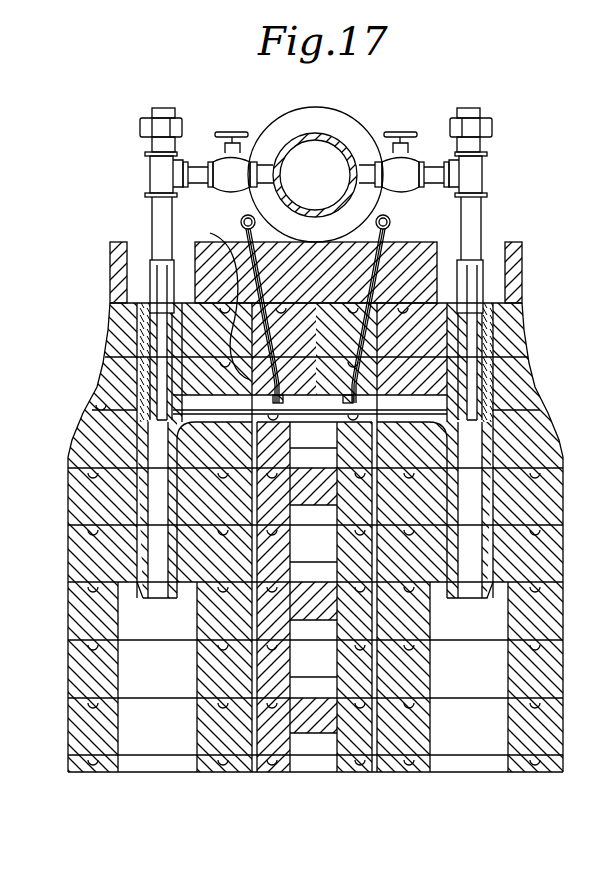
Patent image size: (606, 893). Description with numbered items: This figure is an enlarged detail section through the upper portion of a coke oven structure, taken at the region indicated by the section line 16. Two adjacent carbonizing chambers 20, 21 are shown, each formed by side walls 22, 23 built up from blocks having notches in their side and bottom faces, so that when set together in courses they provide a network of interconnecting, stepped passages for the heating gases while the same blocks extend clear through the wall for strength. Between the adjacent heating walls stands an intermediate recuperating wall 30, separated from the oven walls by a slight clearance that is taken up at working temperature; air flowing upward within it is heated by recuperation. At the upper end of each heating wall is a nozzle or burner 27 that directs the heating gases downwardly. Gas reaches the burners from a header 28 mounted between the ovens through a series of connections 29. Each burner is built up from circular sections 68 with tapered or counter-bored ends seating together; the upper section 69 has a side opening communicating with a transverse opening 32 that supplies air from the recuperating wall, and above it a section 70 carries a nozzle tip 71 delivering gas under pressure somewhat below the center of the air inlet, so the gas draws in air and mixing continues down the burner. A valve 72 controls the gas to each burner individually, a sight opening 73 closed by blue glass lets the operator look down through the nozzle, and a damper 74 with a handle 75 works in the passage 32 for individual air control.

The section line 16 is at (4, 283).
The carbonizing chamber 20 is at (129, 682).
The carbonizing chamber 21 is at (489, 671).
The side wall 22 is at (105, 738).
The side wall 23 is at (213, 740).
The nozzle or burner 27 is at (136, 562).
The header 28 is at (330, 137).
The connection 29 is at (153, 210).
The intermediate wall 30 is at (323, 726).
The transverse opening 32 is at (203, 402).
The circular section 68 is at (143, 488).
The upper section 69 is at (117, 438).
The section 70 is at (147, 358).
The nozzle tip 71 is at (152, 404).
The valve 72 is at (237, 162).
The sight opening 73 is at (157, 105).
The damper 74 is at (217, 298).
The handle 75 is at (245, 216).